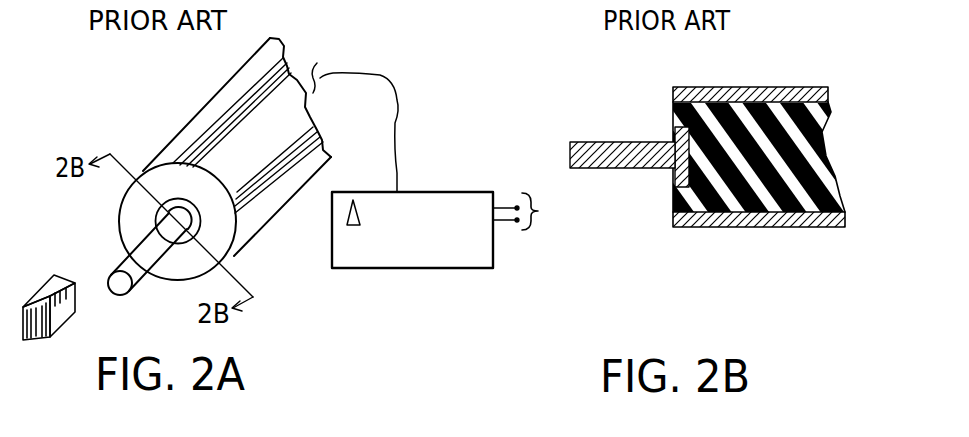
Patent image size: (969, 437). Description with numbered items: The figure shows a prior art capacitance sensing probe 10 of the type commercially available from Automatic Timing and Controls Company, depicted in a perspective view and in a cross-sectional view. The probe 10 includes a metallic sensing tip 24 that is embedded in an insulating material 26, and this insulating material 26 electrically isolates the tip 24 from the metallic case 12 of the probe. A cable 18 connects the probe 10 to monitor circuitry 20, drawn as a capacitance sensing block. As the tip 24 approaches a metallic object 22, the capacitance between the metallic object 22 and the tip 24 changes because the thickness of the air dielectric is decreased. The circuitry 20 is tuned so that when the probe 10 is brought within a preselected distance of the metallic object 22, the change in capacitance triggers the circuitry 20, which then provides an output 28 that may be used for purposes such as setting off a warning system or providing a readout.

In FIG. 2B, the capacitance sensing probe 10 is at (743, 168).
In FIG. 2A, the metallic case 12 is at (276, 216).
In FIG. 2B, the metallic case 12 is at (768, 230).
In FIG. 2A, the cable 18 is at (400, 93).
In FIG. 2A, the monitor circuitry 20 is at (452, 268).
In FIG. 2A, the metallic object 22 is at (40, 340).
In FIG. 2A, the metallic sensing tip 24 is at (122, 270).
In FIG. 2B, the metallic sensing tip 24 is at (597, 142).
In FIG. 2A, the insulating material 26 is at (132, 210).
In FIG. 2B, the insulating material 26 is at (673, 199).
In FIG. 2A, the output 28 is at (558, 228).